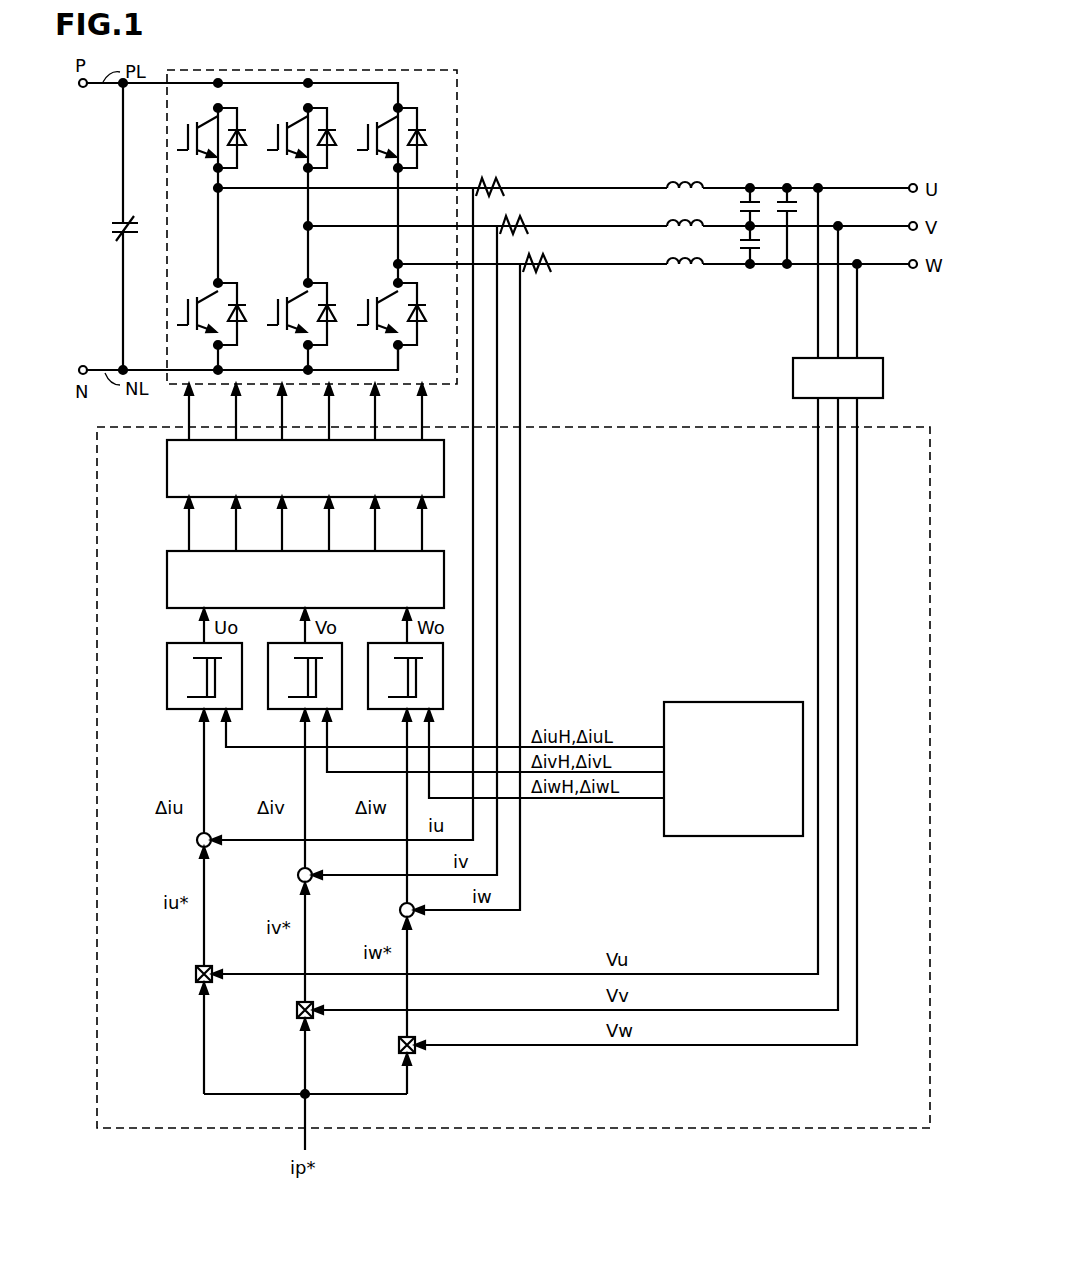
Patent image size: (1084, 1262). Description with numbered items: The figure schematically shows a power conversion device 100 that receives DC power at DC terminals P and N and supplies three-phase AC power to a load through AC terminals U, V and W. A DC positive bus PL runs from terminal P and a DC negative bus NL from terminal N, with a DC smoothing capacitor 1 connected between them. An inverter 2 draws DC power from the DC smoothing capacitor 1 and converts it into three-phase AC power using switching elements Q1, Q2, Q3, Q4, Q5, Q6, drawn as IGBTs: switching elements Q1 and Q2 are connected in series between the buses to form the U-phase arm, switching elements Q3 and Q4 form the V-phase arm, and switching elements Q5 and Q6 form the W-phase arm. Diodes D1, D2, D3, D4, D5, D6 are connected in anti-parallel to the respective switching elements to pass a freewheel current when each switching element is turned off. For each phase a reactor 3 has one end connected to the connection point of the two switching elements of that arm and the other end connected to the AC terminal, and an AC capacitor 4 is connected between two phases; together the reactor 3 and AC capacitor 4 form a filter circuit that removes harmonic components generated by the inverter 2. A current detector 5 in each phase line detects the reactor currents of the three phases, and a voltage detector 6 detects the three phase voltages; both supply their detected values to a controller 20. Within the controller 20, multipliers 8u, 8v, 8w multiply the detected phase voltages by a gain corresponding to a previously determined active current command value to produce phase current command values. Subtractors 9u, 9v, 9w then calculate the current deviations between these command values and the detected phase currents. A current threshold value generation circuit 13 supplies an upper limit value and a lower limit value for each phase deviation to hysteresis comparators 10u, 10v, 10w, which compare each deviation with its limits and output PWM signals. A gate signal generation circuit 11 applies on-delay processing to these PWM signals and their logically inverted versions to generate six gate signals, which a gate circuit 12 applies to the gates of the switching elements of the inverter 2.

The power conversion device 100 is at (872, 92).
The DC smoothing capacitor 1 is at (112, 238).
The inverter 2 is at (405, 72).
The reactor 3 is at (686, 182).
The AC capacitor 4 is at (784, 200).
The current detector 5 is at (496, 185).
The voltage detector 6 is at (793, 379).
The controller 20 is at (880, 428).
The gate circuit 12 is at (167, 467).
The gate signal generation circuit 11 is at (167, 580).
The hysteresis comparator 10u is at (170, 711).
The hysteresis comparator 10v is at (272, 711).
The hysteresis comparator 10w is at (374, 711).
The subtractor 9u is at (211, 846).
The subtractor 9v is at (312, 881).
The subtractor 9w is at (414, 916).
The multiplier 8u is at (212, 980).
The multiplier 8v is at (313, 1016).
The multiplier 8w is at (415, 1051).
The current threshold value generation circuit 13 is at (767, 837).
The switching element Q1 is at (198, 136).
The switching element Q2 is at (198, 313).
The switching element Q3 is at (288, 136).
The switching element Q4 is at (288, 313).
The switching element Q5 is at (378, 136).
The switching element Q6 is at (378, 313).
The diode D1 is at (243, 146).
The diode D2 is at (243, 321).
The diode D3 is at (333, 146).
The diode D4 is at (333, 321).
The diode D5 is at (423, 146).
The diode D6 is at (423, 321).